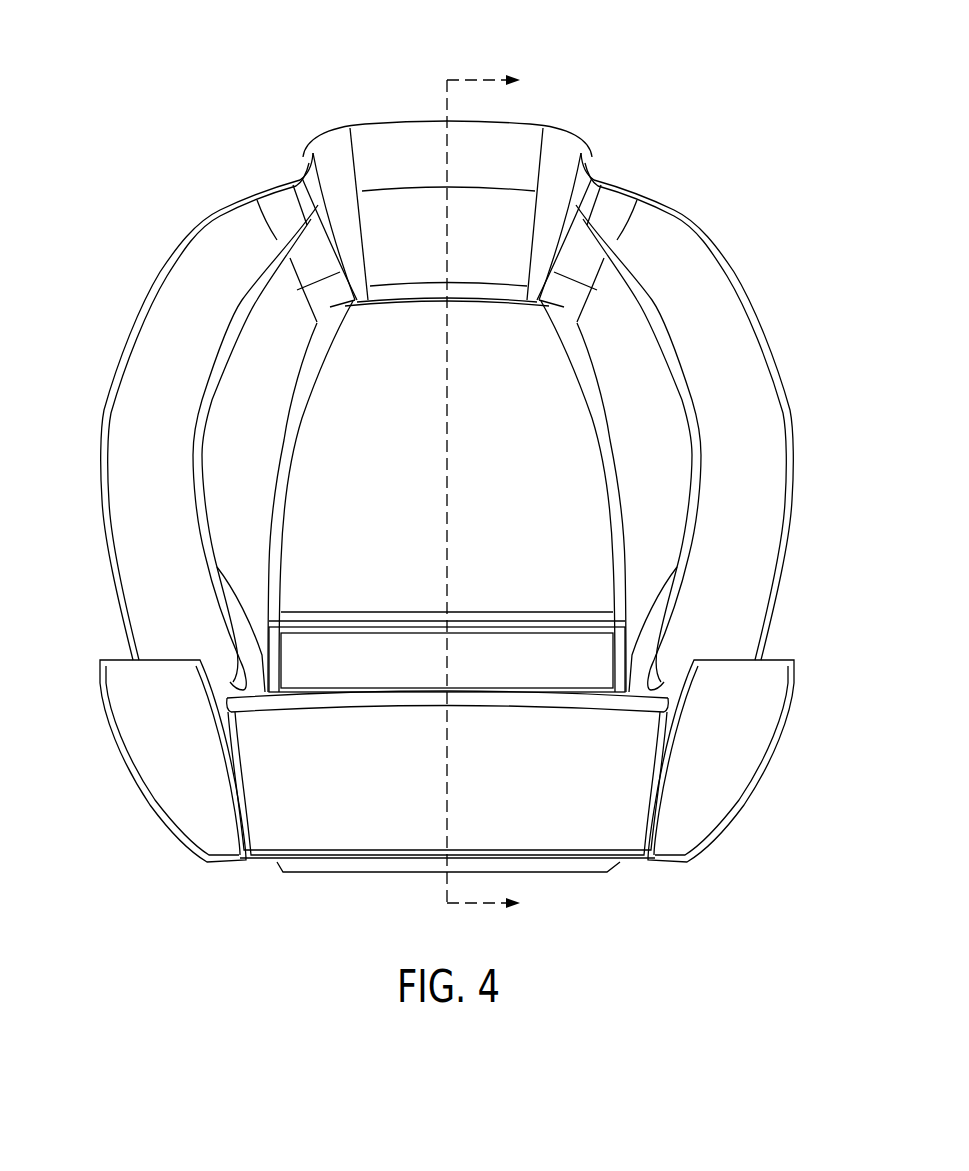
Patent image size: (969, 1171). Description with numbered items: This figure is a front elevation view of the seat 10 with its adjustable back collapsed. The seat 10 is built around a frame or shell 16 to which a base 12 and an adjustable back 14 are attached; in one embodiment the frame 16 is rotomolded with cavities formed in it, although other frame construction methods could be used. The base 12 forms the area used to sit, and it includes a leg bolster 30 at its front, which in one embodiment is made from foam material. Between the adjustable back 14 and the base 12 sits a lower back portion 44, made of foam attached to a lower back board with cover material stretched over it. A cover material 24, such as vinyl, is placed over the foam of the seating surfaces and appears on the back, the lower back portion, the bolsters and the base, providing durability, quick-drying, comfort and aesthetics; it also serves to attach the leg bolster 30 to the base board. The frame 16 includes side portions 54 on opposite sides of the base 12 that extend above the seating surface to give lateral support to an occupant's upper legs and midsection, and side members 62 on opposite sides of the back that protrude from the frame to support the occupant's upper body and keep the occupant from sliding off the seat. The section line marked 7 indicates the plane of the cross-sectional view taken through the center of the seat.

The seat 10 is at (447, 487).
The base 12 is at (465, 817).
The adjustable back 14 is at (437, 406).
The frame 16 is at (170, 250).
The cover material 24 is at (423, 255).
The leg bolster 30 is at (574, 845).
The lower back portion 44 is at (392, 677).
The side portions 54 is at (157, 768).
The side members 62 is at (124, 415).
The section line 7- 7 is at (493, 490).